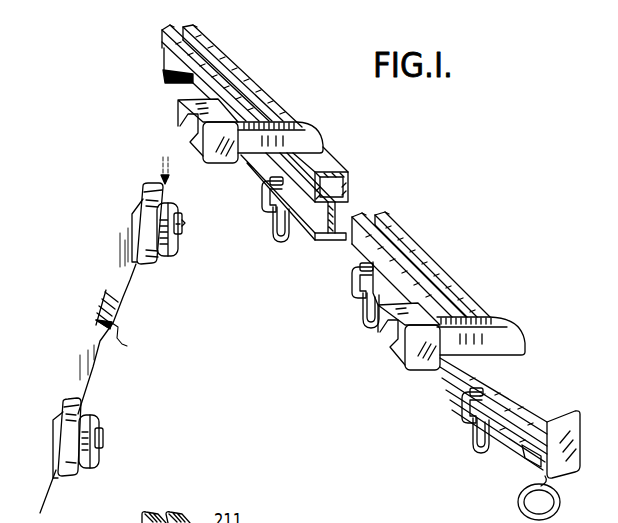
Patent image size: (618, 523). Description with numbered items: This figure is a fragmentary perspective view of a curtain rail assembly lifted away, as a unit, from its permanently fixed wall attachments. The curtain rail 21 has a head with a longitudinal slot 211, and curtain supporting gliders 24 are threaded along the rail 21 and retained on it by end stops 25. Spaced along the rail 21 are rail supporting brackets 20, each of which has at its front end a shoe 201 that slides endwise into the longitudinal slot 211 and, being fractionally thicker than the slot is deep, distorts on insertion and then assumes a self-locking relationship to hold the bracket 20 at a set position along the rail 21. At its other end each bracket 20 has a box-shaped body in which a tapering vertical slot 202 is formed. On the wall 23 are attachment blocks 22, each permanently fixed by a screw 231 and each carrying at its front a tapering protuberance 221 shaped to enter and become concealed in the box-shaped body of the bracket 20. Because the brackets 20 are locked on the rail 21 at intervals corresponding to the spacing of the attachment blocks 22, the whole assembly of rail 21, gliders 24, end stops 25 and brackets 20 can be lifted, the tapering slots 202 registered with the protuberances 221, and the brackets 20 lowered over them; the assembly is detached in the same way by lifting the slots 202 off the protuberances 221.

The rail supporting bracket 20 is at (315, 249).
The shoe 201 is at (313, 164).
The tapering vertical slot 202 is at (185, 143).
The curtain rail 21 is at (350, 196).
The longitudinal slot 211 is at (252, 97).
The attachment block 22 is at (127, 333).
The tapering protuberance 221 is at (177, 249).
The screw 231 is at (182, 226).
The wall 23 is at (95, 368).
The curtain supporting glider 24 is at (269, 208).
The end stop 25 is at (557, 462).